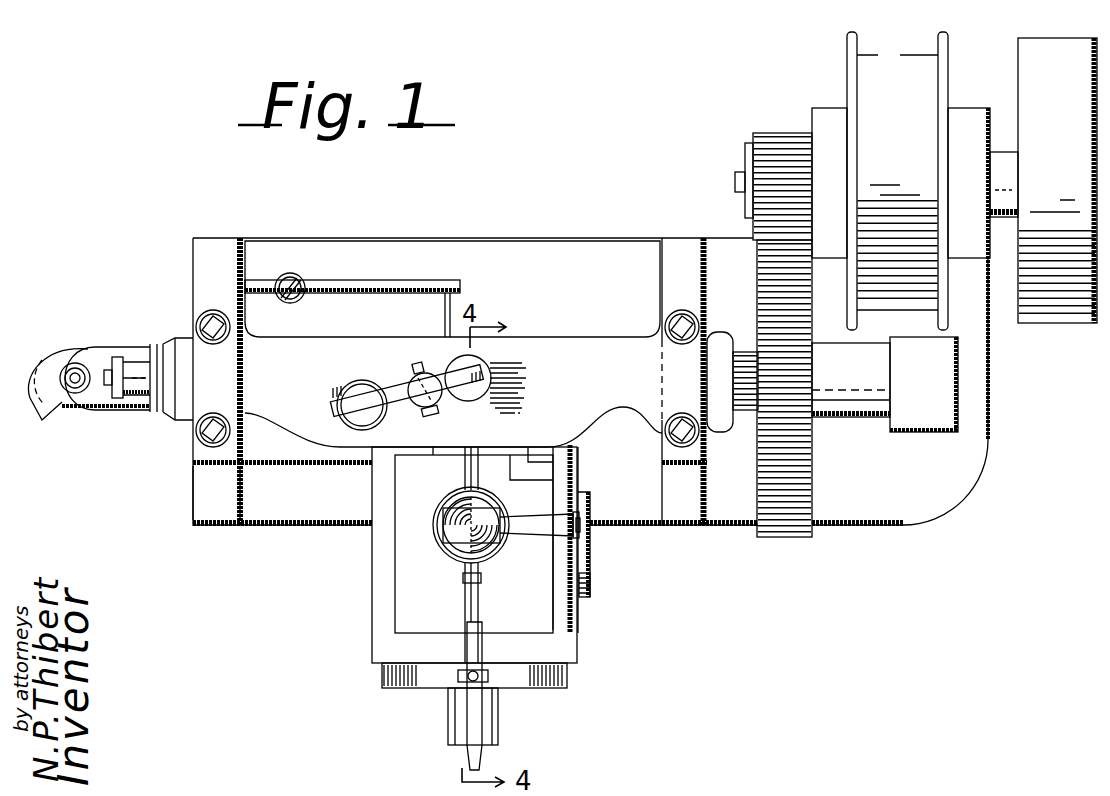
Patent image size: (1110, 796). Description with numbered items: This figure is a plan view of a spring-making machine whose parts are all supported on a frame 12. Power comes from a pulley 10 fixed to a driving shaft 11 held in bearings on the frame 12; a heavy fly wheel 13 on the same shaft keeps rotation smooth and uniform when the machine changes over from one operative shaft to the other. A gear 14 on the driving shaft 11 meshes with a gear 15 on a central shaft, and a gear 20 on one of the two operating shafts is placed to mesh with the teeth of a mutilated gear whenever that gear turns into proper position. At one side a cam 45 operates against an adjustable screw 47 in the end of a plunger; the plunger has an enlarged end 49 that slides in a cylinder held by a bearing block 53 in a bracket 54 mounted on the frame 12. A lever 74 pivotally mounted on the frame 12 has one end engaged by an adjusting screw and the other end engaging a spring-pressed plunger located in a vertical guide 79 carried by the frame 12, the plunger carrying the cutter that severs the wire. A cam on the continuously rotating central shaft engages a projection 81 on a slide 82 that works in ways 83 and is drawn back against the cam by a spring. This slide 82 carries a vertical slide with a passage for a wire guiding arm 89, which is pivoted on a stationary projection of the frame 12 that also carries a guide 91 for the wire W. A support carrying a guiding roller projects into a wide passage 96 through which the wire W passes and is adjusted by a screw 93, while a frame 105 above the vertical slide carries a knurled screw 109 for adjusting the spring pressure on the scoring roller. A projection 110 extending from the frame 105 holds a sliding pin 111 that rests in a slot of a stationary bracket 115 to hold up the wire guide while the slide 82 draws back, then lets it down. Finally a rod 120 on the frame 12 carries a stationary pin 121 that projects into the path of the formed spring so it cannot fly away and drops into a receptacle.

The pulley 10 is at (889, 58).
The driving shaft 11 is at (1000, 160).
The frame 12 is at (582, 246).
The fly wheel 13 is at (1046, 324).
The gear 14 is at (771, 140).
The gear 15 is at (796, 502).
The gear 20 is at (742, 356).
The cam 45 is at (42, 364).
The adjustable screw 47 is at (108, 372).
The enlarged end 49 is at (137, 398).
The bearing block 53 is at (185, 336).
The bracket 54 is at (198, 493).
The lever 74 is at (396, 386).
The vertical guide 79 is at (470, 402).
The projection 81 is at (560, 468).
The slide 82 is at (395, 600).
The ways 83 is at (390, 651).
The wire guiding arm 89 is at (463, 468).
The guide 91 is at (468, 711).
The screw 93 is at (481, 581).
The wide passage 96 is at (437, 503).
The frame 105 is at (443, 540).
The screw 109 is at (462, 546).
The projection 110 is at (528, 535).
The sliding pin 111 is at (582, 526).
The stationary bracket 115 is at (588, 582).
The rod 120 is at (368, 286).
The stationary pin 121 is at (446, 318).
The wire W is at (478, 475).